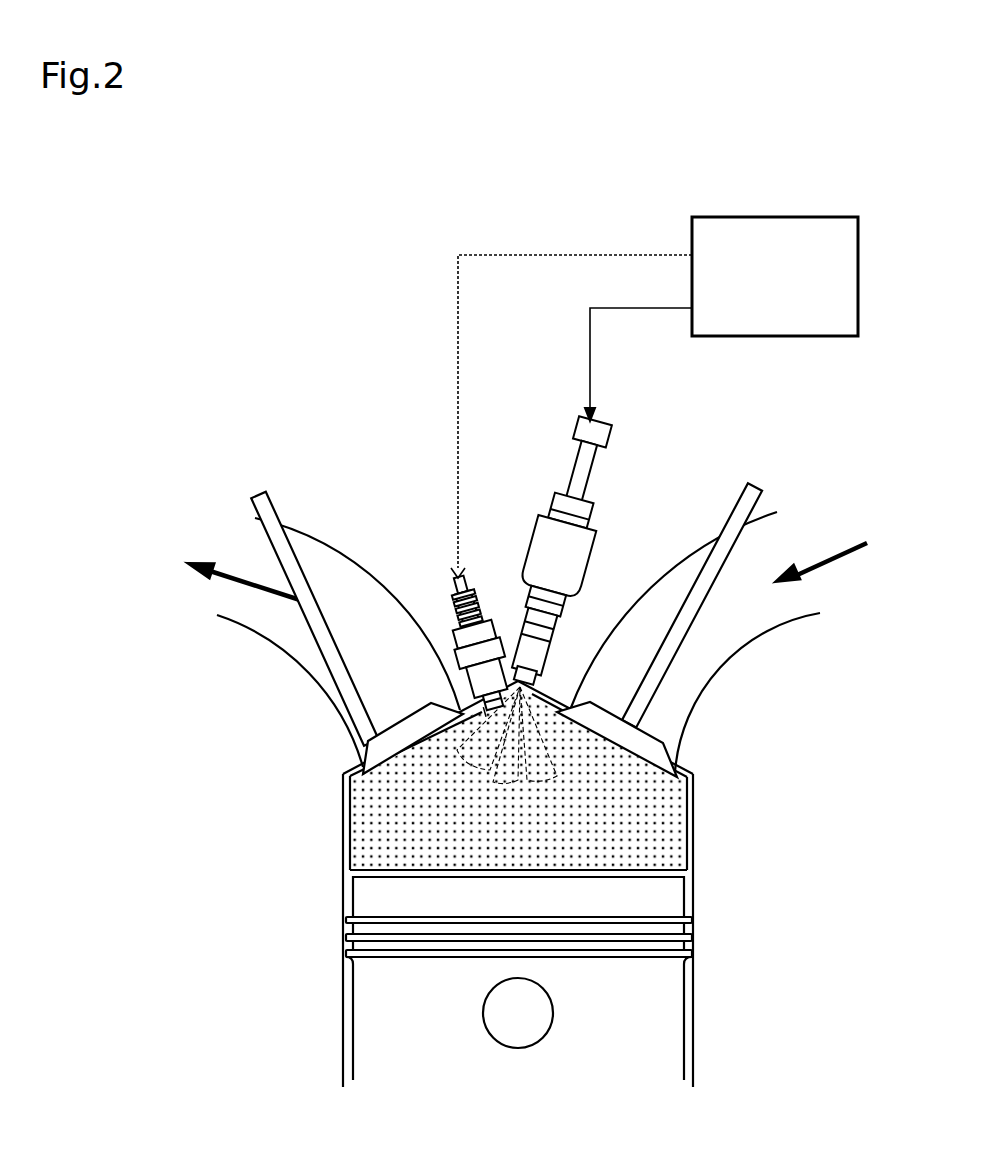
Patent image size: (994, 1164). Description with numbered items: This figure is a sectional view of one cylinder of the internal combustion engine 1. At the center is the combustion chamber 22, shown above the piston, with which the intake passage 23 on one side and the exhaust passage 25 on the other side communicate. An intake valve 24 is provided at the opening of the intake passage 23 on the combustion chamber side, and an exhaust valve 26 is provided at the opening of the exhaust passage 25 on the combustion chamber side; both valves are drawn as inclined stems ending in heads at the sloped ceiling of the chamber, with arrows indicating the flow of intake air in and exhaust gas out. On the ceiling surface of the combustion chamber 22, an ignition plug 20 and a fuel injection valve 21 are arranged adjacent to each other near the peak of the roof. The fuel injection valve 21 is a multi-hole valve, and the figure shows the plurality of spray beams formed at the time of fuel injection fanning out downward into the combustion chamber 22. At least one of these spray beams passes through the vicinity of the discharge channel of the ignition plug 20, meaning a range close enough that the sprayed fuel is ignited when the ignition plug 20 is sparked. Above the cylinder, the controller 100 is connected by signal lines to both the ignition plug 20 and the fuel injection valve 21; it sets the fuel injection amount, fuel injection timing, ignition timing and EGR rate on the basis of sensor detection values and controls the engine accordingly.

The internal combustion engine 1 is at (236, 428).
The ignition plug 20 is at (456, 618).
The fuel injection valve 21 is at (592, 470).
The combustion chamber 22 is at (372, 826).
The intake passage 23 is at (777, 617).
The intake valve 24 is at (760, 492).
The exhaust passage 25 is at (270, 628).
The exhaust valve 26 is at (283, 517).
The controller 100 is at (838, 230).